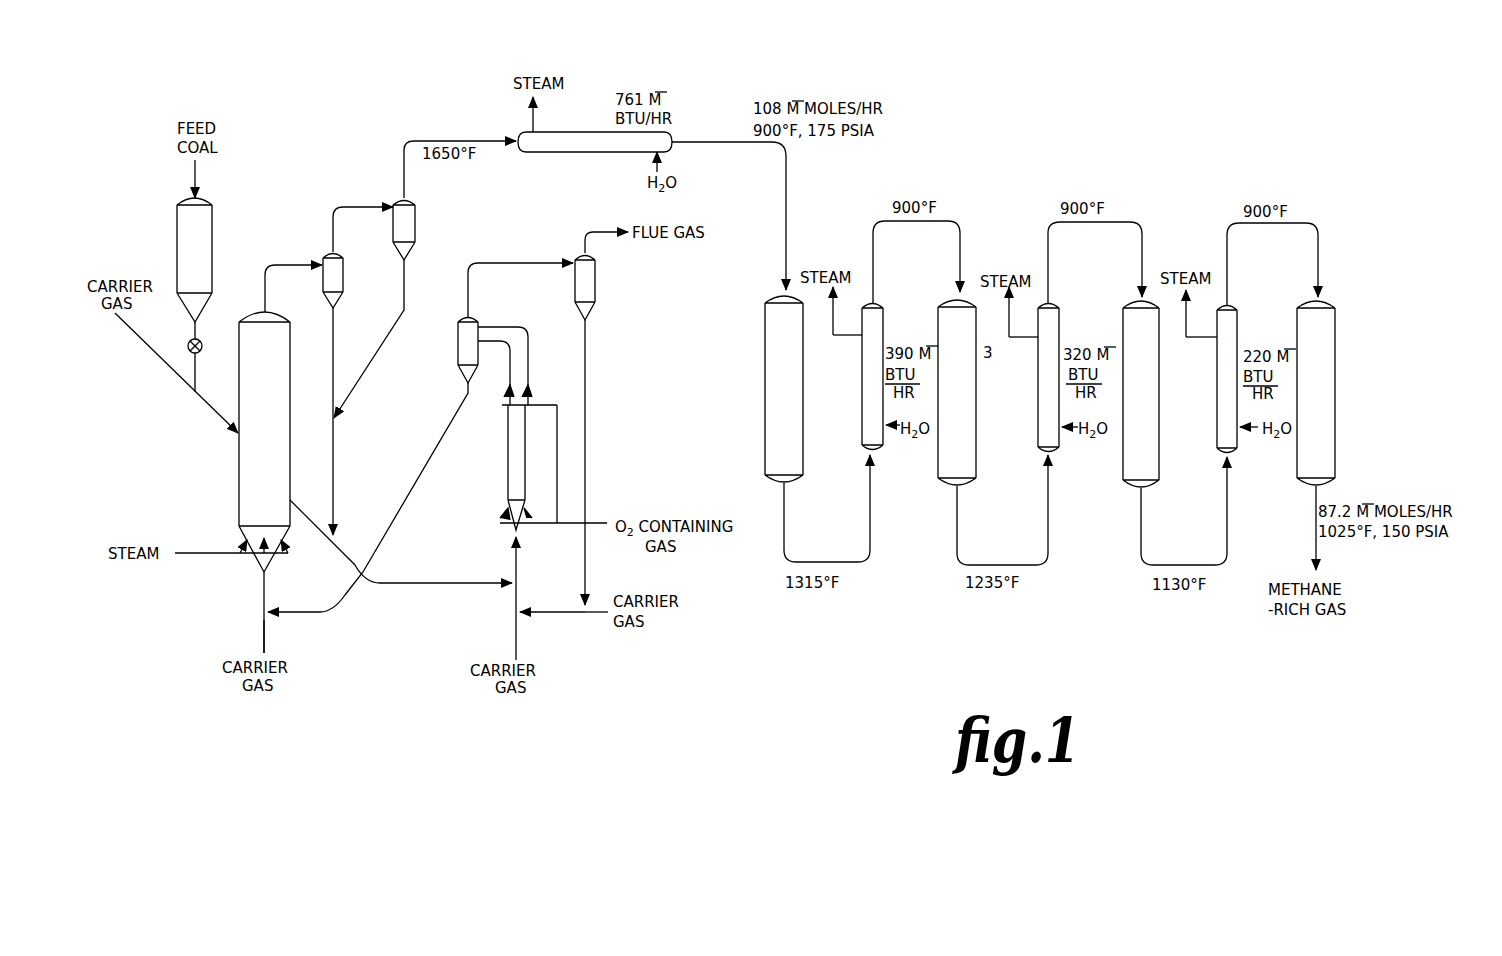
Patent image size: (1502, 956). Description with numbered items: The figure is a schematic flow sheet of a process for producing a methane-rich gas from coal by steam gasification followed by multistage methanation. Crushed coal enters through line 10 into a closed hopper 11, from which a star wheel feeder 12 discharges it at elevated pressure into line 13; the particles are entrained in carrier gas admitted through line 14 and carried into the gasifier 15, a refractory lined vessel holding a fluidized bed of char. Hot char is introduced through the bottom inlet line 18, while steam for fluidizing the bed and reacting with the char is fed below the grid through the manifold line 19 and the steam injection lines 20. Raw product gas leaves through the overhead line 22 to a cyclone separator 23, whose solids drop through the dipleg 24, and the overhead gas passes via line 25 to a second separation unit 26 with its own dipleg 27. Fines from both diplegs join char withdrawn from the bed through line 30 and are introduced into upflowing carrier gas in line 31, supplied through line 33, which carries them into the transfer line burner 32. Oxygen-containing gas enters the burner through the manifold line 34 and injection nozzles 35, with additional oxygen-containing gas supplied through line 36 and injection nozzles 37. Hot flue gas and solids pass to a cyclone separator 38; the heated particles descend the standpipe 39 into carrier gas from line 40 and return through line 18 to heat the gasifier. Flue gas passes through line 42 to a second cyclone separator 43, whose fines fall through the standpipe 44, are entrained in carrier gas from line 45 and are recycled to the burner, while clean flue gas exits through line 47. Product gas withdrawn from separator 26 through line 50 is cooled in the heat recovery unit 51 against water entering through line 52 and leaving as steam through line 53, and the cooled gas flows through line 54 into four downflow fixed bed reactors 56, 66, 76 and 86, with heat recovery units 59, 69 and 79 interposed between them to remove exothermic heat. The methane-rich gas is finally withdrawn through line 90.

The feed line 10 is at (196, 178).
The hopper 11 is at (177, 232).
The star wheel feeder 12 is at (201, 343).
The feed discharge line 13 is at (198, 375).
The carrier gas line 14 is at (148, 358).
The gasifier 15 is at (239, 462).
The bottom inlet line 18 is at (264, 590).
The manifold line 19 is at (195, 556).
The steam injection lines 20 is at (288, 549).
The overhead line 22 is at (275, 265).
The cyclone separator 23 is at (344, 262).
The dipleg 24 is at (332, 366).
The overhead gas line 25 is at (333, 222).
The second separation unit 26 is at (415, 225).
The dipleg 27 is at (380, 352).
The char withdrawal line 30 is at (313, 520).
The carrier gas line 31 is at (512, 562).
The transfer line burner 32 is at (508, 420).
The carrier gas line 33 is at (514, 632).
The manifold line 34 is at (592, 527).
The injection nozzles 35 is at (524, 512).
The oxygen-containing gas line 36 is at (557, 415).
The injection nozzles 37 is at (535, 393).
The cyclone separator 38 is at (457, 330).
The standpipe 39 is at (393, 520).
The carrier gas line 40 is at (265, 648).
The flue gas line 42 is at (500, 265).
The second cyclone separator 43 is at (597, 290).
The standpipe 44 is at (588, 455).
The carrier gas line 45 is at (600, 614).
The flue gas line 47 is at (586, 233).
The exit gas line 50 is at (455, 140).
The heat recovery unit 51 is at (595, 153).
The cooling fluid inlet line 52 is at (662, 168).
The steam withdrawal line 53 is at (535, 122).
The cooled gas line 54 is at (788, 186).
The first fixed bed reactor 56 is at (765, 437).
The first heat recovery unit 59 is at (862, 372).
The second fixed bed reactor 66 is at (937, 445).
The second heat recovery unit 69 is at (1040, 368).
The third fixed bed reactor 76 is at (1123, 445).
The third heat recovery unit 79 is at (1218, 372).
The fourth fixed bed reactor 86 is at (1335, 455).
The product gas line 90 is at (1315, 535).